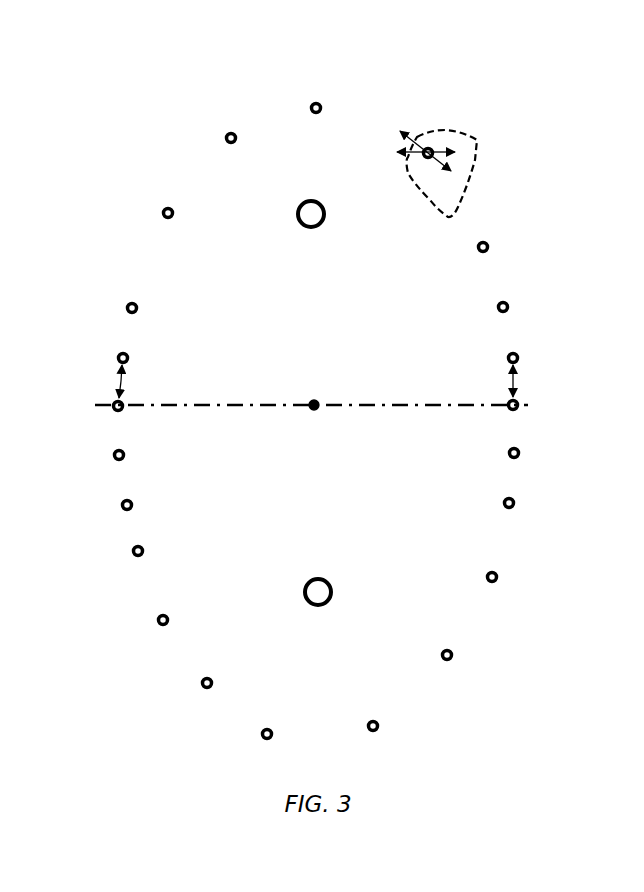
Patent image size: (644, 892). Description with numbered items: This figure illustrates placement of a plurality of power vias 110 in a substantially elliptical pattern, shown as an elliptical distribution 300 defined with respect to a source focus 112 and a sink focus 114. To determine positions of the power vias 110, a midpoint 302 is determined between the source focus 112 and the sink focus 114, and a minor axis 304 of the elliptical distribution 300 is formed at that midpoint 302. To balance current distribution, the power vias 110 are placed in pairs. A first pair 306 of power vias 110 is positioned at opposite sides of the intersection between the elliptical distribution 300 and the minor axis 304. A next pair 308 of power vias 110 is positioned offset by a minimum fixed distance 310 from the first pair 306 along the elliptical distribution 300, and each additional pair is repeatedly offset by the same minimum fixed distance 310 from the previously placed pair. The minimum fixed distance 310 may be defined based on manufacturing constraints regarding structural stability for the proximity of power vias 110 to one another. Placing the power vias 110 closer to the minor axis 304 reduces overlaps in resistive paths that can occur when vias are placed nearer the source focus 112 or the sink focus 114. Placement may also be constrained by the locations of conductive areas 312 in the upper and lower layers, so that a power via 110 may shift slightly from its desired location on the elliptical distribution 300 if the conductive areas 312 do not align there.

The elliptical distribution 300 is at (337, 37).
The power vias 110 is at (518, 514).
The source focus 112 is at (329, 577).
The sink focus 114 is at (317, 198).
The midpoint 302 is at (317, 398).
The minor axis 304 is at (237, 412).
The first pair 306 is at (112, 412).
The next pair 308 is at (130, 355).
The minimum fixed distance 310 is at (118, 390).
The conductive areas 312 is at (492, 173).